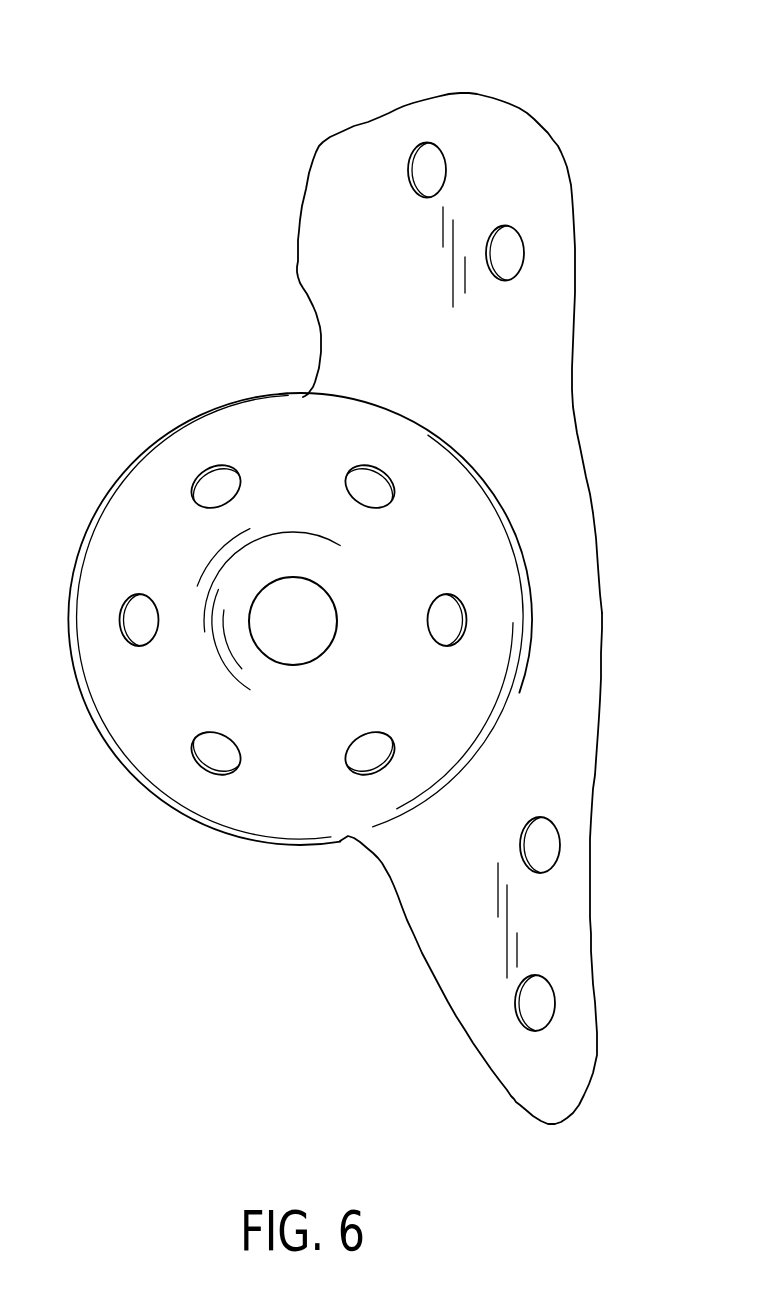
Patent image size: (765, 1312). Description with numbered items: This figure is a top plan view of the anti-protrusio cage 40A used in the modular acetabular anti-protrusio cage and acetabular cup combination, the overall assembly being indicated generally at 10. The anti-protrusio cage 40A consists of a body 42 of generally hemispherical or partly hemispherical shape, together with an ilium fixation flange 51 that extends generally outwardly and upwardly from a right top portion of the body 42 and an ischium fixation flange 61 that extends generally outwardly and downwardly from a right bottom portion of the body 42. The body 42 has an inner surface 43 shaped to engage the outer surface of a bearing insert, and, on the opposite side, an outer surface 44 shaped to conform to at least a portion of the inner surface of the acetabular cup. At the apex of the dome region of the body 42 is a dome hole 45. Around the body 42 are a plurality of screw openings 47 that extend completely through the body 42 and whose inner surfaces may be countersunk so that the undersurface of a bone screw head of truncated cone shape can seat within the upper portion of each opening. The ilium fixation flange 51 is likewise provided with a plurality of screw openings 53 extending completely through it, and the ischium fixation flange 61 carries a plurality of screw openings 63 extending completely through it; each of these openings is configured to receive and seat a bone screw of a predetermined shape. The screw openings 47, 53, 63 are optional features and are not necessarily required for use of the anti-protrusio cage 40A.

The mounting bracket assembly 10 is at (238, 365).
The anti-protrusio cage 40A is at (87, 760).
The body 42 is at (292, 810).
The inner surface 43 is at (304, 740).
The outer surface 44 is at (133, 783).
The dome hole 45 is at (325, 604).
The screw openings 47 is at (347, 478).
The ilium fixation flange 51 is at (378, 193).
The screw openings 53 is at (446, 150).
The ischium fixation flange 61 is at (580, 1065).
The screw openings 63 is at (557, 1002).